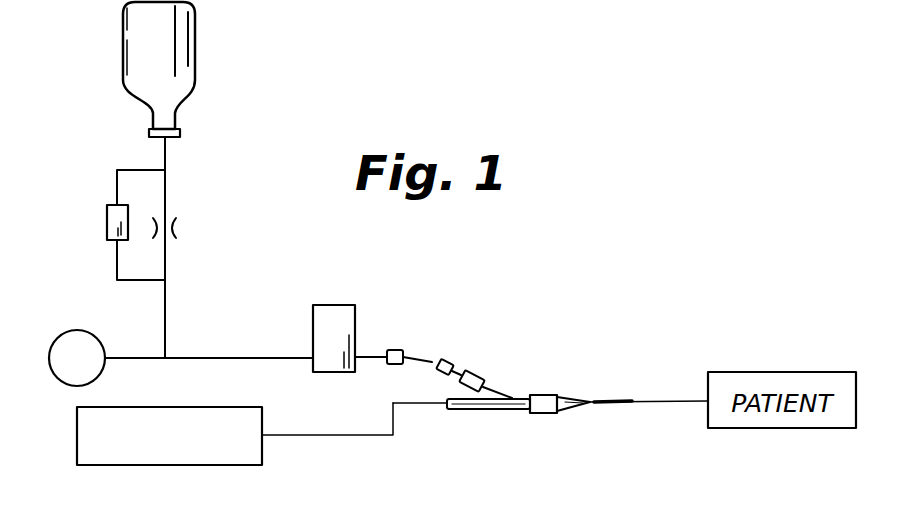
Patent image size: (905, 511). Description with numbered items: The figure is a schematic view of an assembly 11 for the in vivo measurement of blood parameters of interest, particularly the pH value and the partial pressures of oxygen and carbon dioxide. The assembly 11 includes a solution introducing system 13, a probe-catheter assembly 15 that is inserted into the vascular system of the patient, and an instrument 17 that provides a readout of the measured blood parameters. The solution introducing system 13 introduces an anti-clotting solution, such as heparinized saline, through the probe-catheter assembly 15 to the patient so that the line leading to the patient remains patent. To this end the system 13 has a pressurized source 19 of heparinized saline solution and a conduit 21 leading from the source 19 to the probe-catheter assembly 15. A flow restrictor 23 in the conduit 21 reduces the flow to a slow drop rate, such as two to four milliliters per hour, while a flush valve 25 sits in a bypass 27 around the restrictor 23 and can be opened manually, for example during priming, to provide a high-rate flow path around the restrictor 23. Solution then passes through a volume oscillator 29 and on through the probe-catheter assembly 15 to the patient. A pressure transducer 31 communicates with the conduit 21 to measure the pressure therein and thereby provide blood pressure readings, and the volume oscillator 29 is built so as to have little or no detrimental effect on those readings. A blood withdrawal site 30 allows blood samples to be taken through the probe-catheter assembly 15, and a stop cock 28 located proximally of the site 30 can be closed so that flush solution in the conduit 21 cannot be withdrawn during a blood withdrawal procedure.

The assembly 11 is at (460, 333).
The solution introducing system 13 is at (173, 310).
The probe-catheter assembly 15 is at (517, 391).
The instrument 17 is at (255, 466).
The pressurized source 19 is at (196, 10).
The conduit 21 is at (166, 156).
The flow restrictor 23 is at (177, 230).
The flush valve 25 is at (107, 233).
The bypass 27 is at (117, 170).
The stop cock 28 is at (401, 350).
The volume oscillator 29 is at (306, 332).
The blood withdrawal site 30 is at (458, 361).
The pressure transducer 31 is at (80, 330).